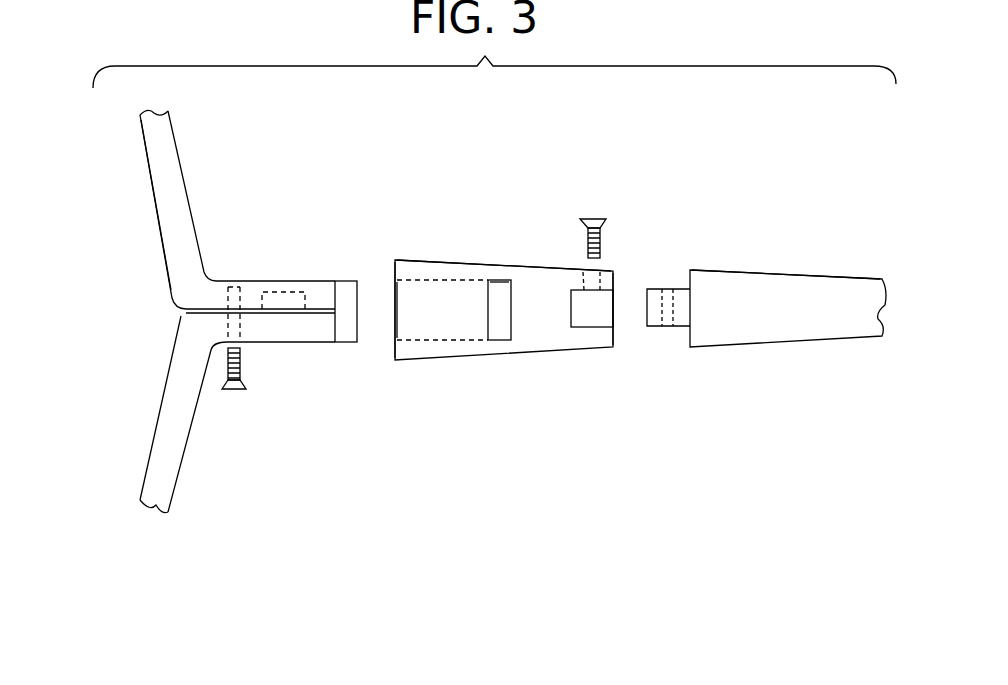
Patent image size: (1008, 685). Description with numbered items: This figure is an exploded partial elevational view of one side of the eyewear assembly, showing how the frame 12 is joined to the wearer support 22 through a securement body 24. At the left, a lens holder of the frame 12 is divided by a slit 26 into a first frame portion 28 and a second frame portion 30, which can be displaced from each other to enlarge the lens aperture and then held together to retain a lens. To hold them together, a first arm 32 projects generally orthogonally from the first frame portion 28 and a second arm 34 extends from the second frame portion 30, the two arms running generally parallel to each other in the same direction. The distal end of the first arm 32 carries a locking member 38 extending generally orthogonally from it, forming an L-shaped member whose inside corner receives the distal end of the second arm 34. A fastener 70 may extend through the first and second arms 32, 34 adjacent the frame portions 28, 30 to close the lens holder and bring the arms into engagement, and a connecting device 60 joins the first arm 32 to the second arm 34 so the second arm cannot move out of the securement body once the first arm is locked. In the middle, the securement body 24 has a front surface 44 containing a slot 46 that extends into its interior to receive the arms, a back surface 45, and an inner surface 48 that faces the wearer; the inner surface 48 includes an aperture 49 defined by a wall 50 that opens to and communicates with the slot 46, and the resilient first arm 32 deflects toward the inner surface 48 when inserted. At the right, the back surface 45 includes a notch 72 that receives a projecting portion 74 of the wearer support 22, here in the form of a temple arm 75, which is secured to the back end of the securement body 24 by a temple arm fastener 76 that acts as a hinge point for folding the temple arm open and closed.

The frame 12 is at (176, 146).
The wearer support 22 is at (782, 341).
The securement body 24 is at (520, 355).
The slit 26 is at (181, 313).
The first frame portion 28 is at (152, 172).
The second frame portion 30 is at (163, 398).
The first arm 32 is at (242, 281).
The second arm 34 is at (290, 343).
The locking member 38 is at (346, 281).
The front surface 44 is at (395, 353).
The back surface 45 is at (613, 340).
The slot 46 is at (405, 325).
The inner surface 48 is at (444, 268).
The aperture 49 is at (499, 300).
The wall 50 is at (510, 317).
The connecting device 60 is at (280, 300).
The fastener 70 is at (237, 392).
The notch 72 is at (602, 303).
The projecting portion 74 is at (677, 289).
The temple arm 75 is at (774, 271).
The temple arm fastener 76 is at (585, 218).